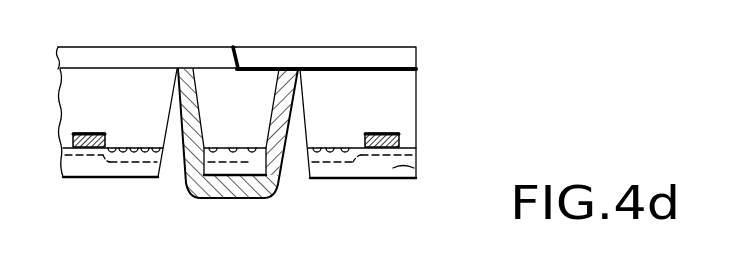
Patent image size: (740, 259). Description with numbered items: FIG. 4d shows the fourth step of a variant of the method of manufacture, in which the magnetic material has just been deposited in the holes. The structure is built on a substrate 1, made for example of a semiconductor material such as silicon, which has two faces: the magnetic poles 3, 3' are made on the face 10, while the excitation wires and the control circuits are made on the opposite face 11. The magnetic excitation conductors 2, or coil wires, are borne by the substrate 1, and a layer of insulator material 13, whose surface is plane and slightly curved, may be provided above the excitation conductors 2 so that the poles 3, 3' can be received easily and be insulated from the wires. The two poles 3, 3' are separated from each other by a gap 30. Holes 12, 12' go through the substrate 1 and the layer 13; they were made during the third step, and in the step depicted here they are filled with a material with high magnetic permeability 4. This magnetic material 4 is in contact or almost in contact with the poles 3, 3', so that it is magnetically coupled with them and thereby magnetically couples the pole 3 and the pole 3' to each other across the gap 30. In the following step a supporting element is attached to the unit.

The substrate 1 is at (383, 102).
The magnetic excitation conductors 2 is at (268, 190).
The magnetic pole 3 is at (147, 36).
The magnetic pole 3' is at (326, 37).
The material with high magnetic permeability 4 is at (235, 188).
The face of the substrate 10 is at (162, 58).
The face of the substrate 11 is at (97, 162).
The hole 12 is at (118, 183).
The hole 12' is at (354, 173).
The layer of insulator material 13 is at (415, 177).
The gap 30 is at (233, 47).